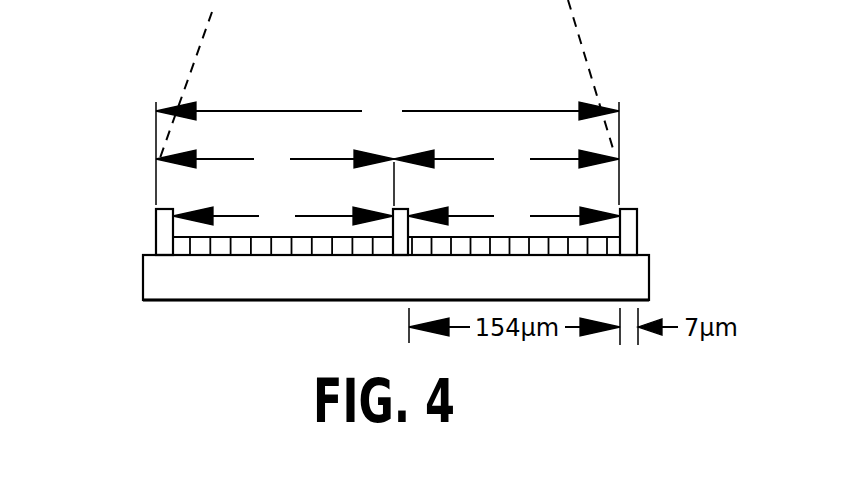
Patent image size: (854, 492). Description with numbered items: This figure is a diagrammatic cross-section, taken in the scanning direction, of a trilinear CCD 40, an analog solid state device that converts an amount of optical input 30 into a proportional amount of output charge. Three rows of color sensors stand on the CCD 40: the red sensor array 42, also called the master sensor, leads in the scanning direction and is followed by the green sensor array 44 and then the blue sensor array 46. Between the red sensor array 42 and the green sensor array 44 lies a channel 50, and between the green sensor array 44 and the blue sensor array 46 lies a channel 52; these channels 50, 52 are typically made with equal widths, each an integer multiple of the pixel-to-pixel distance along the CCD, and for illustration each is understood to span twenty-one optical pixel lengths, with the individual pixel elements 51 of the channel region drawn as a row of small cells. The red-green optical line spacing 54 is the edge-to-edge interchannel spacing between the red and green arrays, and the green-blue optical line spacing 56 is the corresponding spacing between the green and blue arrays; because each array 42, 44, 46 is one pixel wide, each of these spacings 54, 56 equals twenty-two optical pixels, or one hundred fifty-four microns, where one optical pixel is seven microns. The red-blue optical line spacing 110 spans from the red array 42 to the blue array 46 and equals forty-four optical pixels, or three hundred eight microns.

The optical input 30 is at (192, 72).
The trilinear CCD 40 is at (650, 276).
The red sensor array 42 is at (155, 223).
The green sensor array 44 is at (403, 209).
The blue sensor array 46 is at (637, 228).
The channel 50 is at (283, 216).
The pixel element 51 is at (222, 247).
The channel 52 is at (514, 216).
The red-green optical line spacing 54 is at (275, 159).
The green-blue optical line spacing 56 is at (506, 159).
The red-blue optical line spacing 110 is at (387, 111).